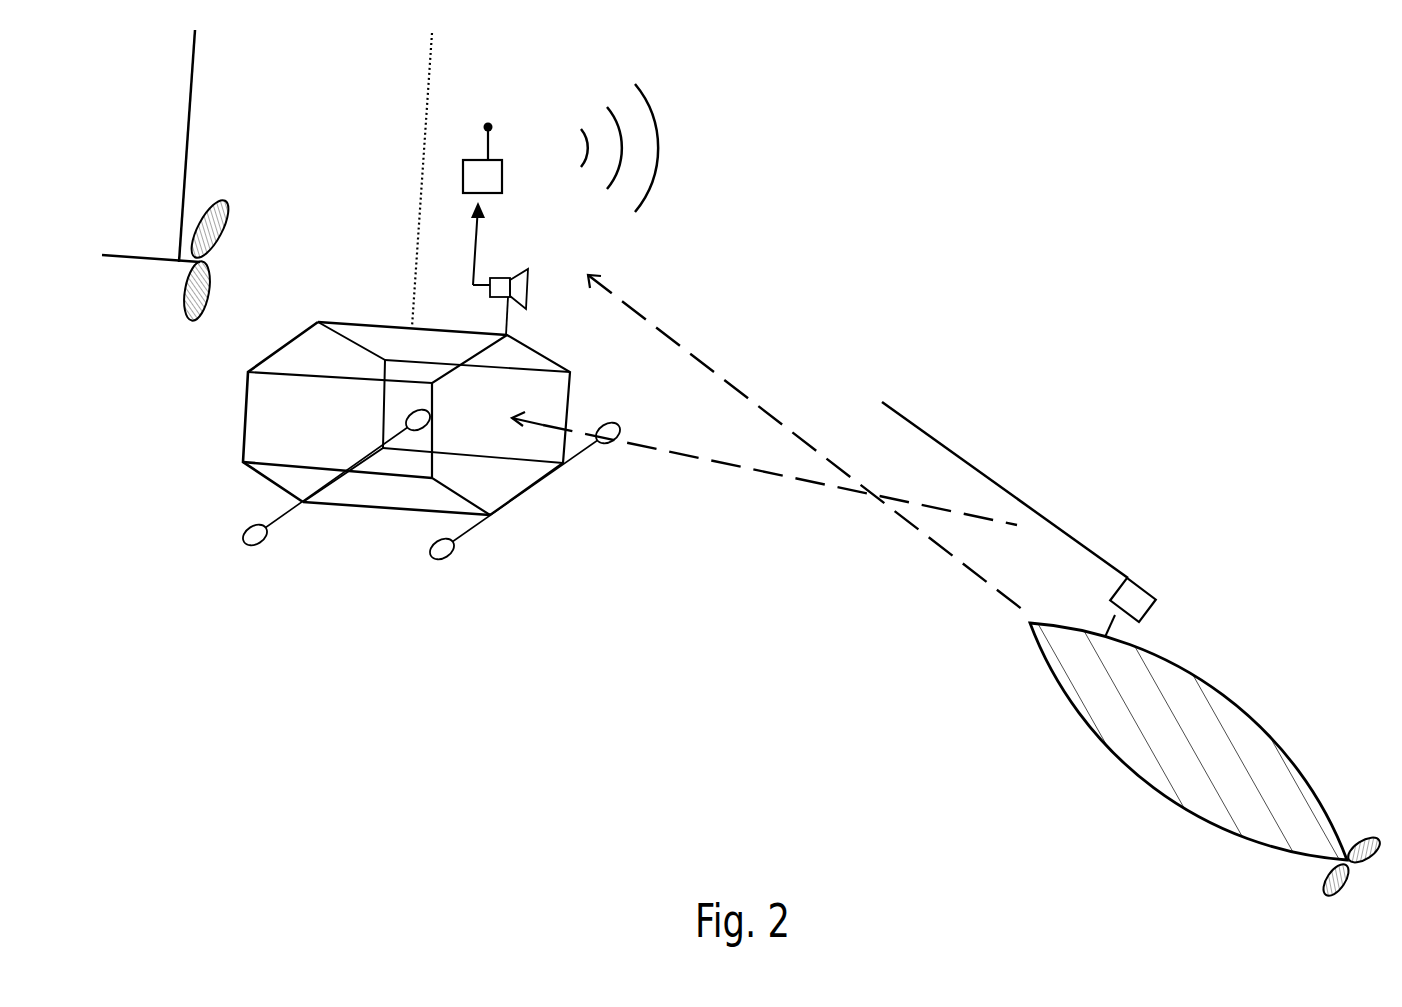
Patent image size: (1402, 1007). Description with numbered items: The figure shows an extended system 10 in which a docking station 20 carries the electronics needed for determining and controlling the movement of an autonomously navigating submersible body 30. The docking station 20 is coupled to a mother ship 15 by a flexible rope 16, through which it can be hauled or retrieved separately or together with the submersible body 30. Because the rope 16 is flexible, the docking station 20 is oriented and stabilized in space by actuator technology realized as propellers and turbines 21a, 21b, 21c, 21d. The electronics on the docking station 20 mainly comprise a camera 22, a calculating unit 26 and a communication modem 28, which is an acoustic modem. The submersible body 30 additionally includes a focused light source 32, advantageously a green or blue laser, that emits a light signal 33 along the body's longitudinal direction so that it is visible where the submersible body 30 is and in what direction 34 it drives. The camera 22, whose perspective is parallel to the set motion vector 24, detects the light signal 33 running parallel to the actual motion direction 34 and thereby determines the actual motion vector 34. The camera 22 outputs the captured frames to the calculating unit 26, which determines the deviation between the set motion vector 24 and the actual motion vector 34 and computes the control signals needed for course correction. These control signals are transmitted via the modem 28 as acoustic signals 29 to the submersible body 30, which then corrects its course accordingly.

The system 10 is at (1352, 160).
The mother ship 15 is at (195, 90).
The rope 16 is at (427, 98).
The docking station 20 is at (353, 322).
The propeller 21a is at (247, 547).
The propeller 21b is at (437, 560).
The propeller 21c is at (405, 419).
The propeller 21d is at (602, 445).
The camera 22 is at (502, 278).
The set motion vector 24 is at (732, 467).
The calculating unit 26 is at (497, 158).
The communication modem 28 is at (487, 123).
The acoustic signals 29 is at (660, 110).
The autonomously navigating submersible body 30 is at (1238, 708).
The focused light source 32 is at (1145, 583).
The light signal 33 is at (972, 472).
The actual motion vector 34 is at (755, 405).